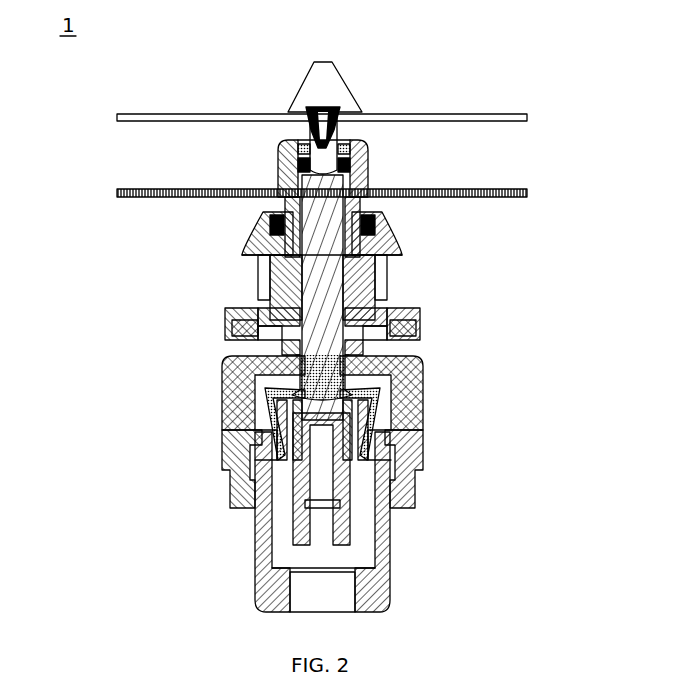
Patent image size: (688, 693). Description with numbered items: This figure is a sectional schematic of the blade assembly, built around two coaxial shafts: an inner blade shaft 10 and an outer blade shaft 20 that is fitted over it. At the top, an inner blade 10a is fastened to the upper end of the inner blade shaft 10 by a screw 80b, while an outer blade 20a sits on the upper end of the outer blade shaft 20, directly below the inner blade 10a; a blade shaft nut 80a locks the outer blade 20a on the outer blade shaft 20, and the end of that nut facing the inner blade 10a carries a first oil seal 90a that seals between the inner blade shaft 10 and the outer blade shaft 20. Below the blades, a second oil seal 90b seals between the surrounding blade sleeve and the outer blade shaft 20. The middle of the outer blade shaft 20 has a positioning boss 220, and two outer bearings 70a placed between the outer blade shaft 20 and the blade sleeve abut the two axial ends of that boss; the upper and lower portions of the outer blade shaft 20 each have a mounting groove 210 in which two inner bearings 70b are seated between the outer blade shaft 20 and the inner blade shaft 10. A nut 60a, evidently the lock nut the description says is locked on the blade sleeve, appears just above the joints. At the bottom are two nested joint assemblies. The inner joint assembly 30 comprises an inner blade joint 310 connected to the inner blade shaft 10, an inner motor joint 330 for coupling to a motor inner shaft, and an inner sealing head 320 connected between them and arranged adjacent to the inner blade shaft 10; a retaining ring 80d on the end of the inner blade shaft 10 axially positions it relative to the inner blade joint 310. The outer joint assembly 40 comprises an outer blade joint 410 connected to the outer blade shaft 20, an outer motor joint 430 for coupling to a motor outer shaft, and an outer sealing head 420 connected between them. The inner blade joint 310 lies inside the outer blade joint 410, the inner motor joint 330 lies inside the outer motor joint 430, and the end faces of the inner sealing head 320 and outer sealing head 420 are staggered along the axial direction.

The inner blade shaft 10 is at (322, 214).
The inner blade 10a is at (300, 118).
The outer blade shaft 20 is at (400, 240).
The outer blade 20a is at (187, 190).
The mounting groove 210 is at (278, 168).
The positioning boss 220 is at (383, 287).
The nut 60a is at (228, 318).
The outer bearing 70a is at (268, 262).
The inner bearing 70b is at (370, 168).
The blade shaft nut 80a is at (368, 150).
The screw 80b is at (340, 112).
The retaining ring 80d is at (395, 380).
The first oil seal 90a is at (345, 140).
The second oil seal 90b is at (382, 215).
The inner joint assembly 30 is at (534, 388).
The inner blade joint 310 is at (380, 396).
The inner sealing head 320 is at (397, 430).
The inner motor joint 330 is at (410, 470).
The outer joint assembly 40 is at (107, 376).
The outer blade joint 410 is at (225, 390).
The outer sealing head 420 is at (228, 438).
The outer motor joint 430 is at (275, 583).